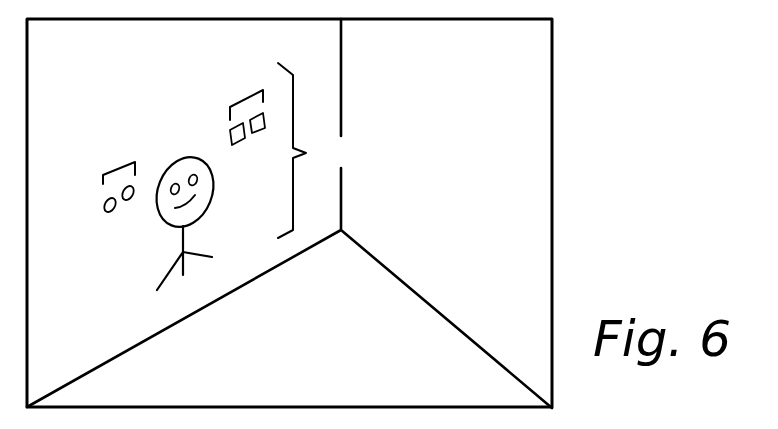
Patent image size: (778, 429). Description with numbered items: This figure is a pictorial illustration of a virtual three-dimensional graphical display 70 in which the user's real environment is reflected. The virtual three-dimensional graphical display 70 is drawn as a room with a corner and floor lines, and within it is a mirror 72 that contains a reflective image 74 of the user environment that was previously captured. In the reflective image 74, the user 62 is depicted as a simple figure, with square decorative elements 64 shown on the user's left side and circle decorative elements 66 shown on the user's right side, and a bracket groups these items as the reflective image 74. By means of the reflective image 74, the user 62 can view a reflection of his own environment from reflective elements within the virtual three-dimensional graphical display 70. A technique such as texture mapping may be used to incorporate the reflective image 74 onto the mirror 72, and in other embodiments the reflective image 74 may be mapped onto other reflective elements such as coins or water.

The virtual three-dimensional graphical display 70 is at (552, 52).
The mirror 72 is at (176, 93).
The user 62 is at (209, 200).
The square decorative elements 64 is at (247, 94).
The musical note icon 66 is at (117, 162).
The reflective image 74 is at (310, 150).